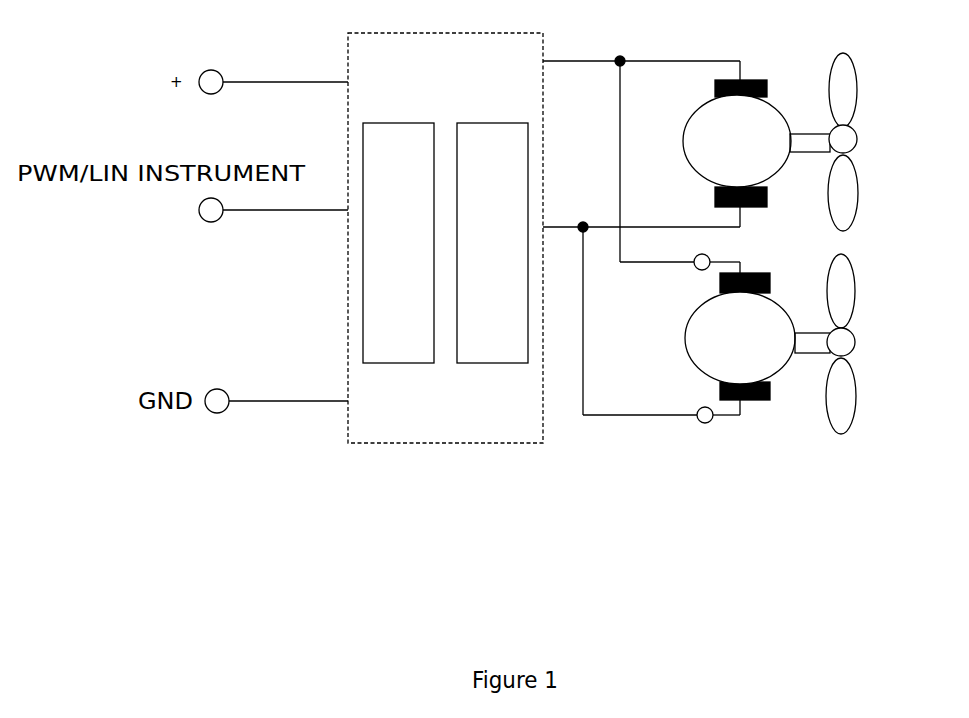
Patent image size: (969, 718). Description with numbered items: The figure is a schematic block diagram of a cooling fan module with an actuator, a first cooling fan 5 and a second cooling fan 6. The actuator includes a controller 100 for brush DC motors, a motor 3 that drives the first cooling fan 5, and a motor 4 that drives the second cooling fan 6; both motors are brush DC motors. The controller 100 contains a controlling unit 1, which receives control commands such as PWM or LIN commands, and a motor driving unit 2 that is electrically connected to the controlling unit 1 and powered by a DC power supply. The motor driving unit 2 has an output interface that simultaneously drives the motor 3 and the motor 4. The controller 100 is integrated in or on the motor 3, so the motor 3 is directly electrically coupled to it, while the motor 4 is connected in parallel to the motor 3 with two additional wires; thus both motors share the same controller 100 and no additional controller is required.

The controller 100 is at (458, 443).
The controlling unit 1 is at (405, 363).
The motor driving unit 2 is at (487, 123).
The motor 3 is at (683, 150).
The motor 4 is at (685, 340).
The first cooling fan 5 is at (857, 183).
The second cooling fan 6 is at (857, 400).